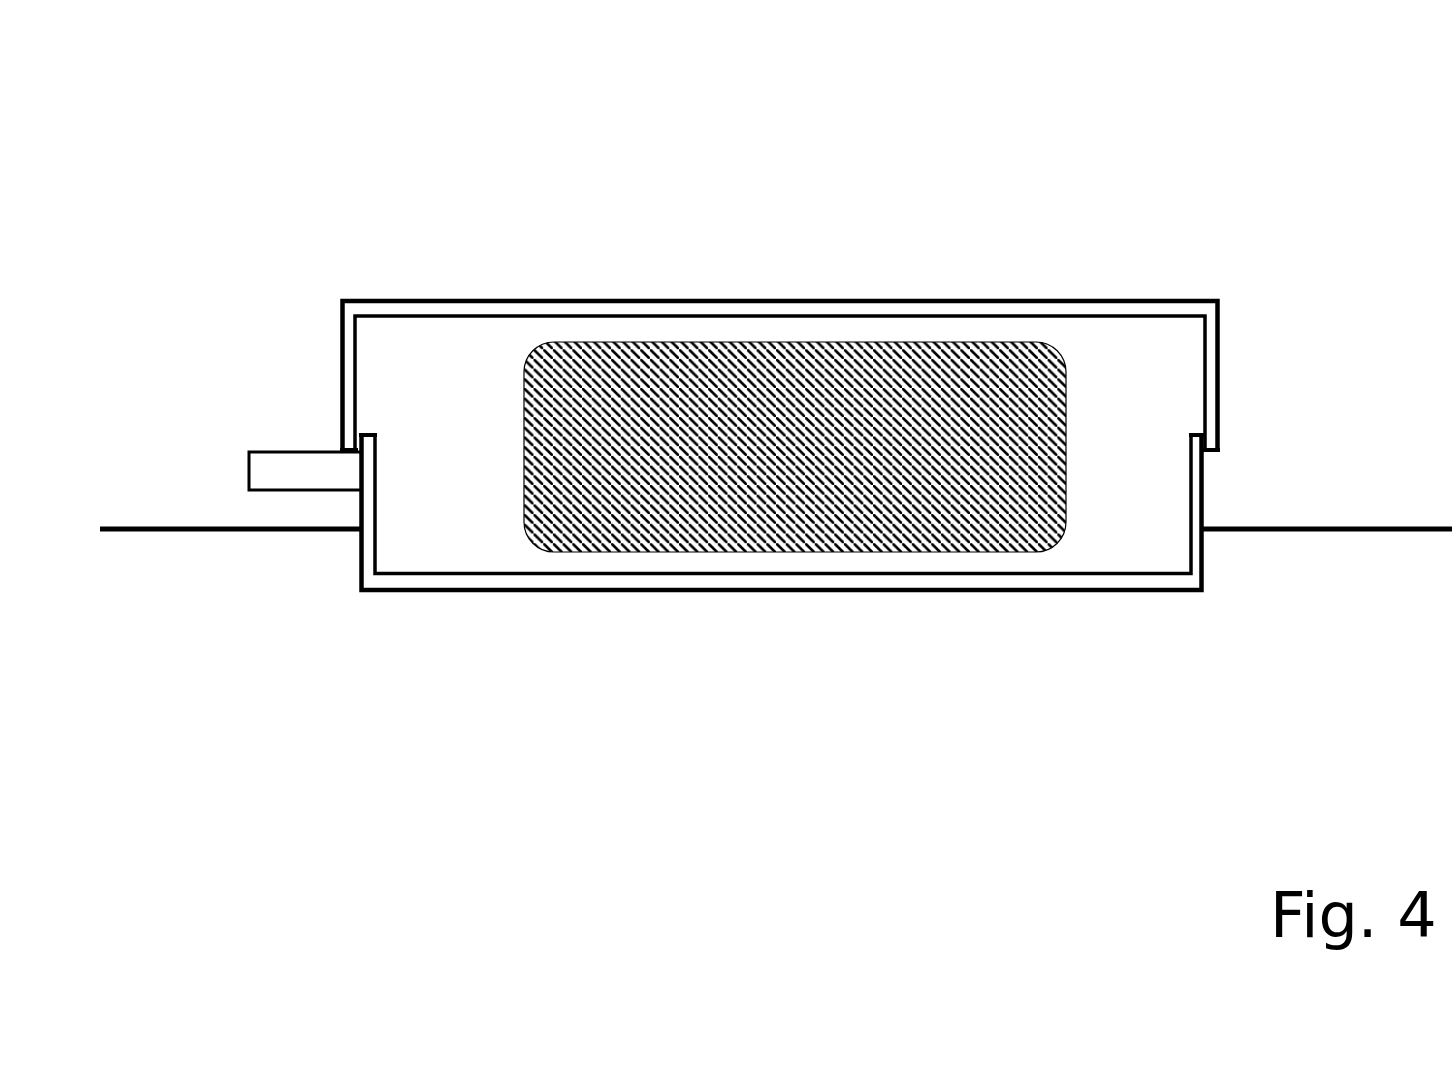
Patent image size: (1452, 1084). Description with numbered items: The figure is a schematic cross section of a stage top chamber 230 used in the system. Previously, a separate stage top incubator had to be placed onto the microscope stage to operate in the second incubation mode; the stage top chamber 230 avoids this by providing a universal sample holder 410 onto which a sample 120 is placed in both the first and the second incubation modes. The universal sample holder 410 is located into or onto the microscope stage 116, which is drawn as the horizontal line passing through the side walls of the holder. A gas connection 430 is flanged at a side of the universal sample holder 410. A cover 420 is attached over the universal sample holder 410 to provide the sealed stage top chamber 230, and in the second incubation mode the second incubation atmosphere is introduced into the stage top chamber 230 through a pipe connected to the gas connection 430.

The stage top chamber 230 is at (472, 185).
The cover 420 is at (1172, 299).
The universal sample holder 410 is at (545, 596).
The gas connection 430 is at (264, 468).
The sample 120 is at (525, 388).
The microscope stage 116 is at (1338, 537).